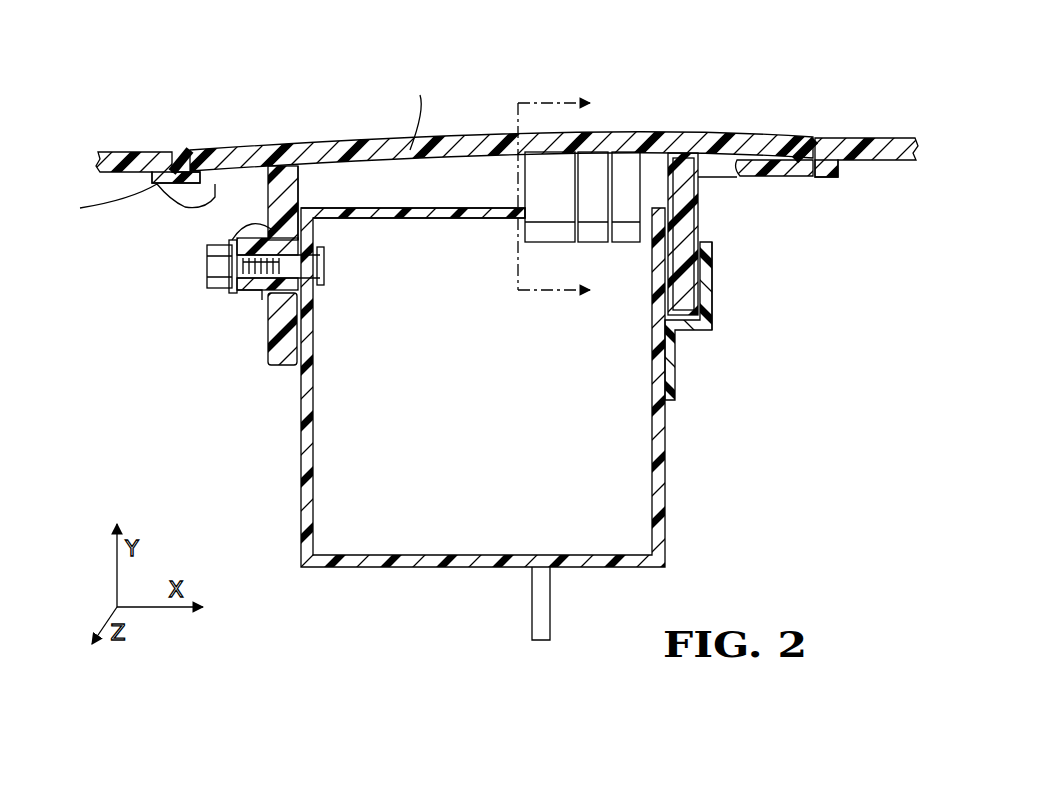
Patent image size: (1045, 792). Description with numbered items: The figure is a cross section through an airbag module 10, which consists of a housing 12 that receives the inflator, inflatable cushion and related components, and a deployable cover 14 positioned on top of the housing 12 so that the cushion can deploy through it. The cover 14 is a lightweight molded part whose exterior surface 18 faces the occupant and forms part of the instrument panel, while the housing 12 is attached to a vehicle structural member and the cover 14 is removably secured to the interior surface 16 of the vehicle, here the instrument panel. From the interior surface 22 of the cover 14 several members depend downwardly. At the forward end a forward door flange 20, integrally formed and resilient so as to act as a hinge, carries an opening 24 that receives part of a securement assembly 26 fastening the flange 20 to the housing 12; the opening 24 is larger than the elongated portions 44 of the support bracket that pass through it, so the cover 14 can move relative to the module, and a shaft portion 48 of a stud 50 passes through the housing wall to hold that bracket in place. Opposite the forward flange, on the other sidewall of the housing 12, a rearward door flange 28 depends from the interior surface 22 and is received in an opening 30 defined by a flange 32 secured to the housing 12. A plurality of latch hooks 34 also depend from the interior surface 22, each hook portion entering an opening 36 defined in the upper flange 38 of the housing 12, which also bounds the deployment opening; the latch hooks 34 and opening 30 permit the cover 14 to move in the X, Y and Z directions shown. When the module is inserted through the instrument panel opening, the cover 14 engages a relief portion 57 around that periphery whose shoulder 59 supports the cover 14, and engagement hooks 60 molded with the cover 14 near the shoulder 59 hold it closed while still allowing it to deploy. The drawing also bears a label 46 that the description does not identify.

The airbag module 10 is at (720, 76).
The housing 12 is at (660, 522).
The deployable cover 14 is at (448, 132).
The interior surface 16 is at (160, 155).
The exterior surface 18 is at (264, 147).
The forward door flange 20 is at (318, 167).
The interior surface 22 is at (410, 150).
The opening 24 is at (262, 300).
The securement assembly 26 is at (204, 268).
The rearward door flange 28 is at (690, 244).
The opening 30 is at (706, 272).
The flange 32 is at (713, 300).
The latch hooks 34 is at (572, 165).
The opening 36 is at (506, 167).
The flange 38 is at (383, 220).
The elongated portions 44 is at (240, 232).
The nut 46 is at (244, 305).
The shaft portion 48 is at (236, 285).
The stud 50 is at (328, 288).
The relief portion 57 is at (160, 181).
The shoulder 59 is at (188, 160).
The engagement hooks 60 is at (205, 200).